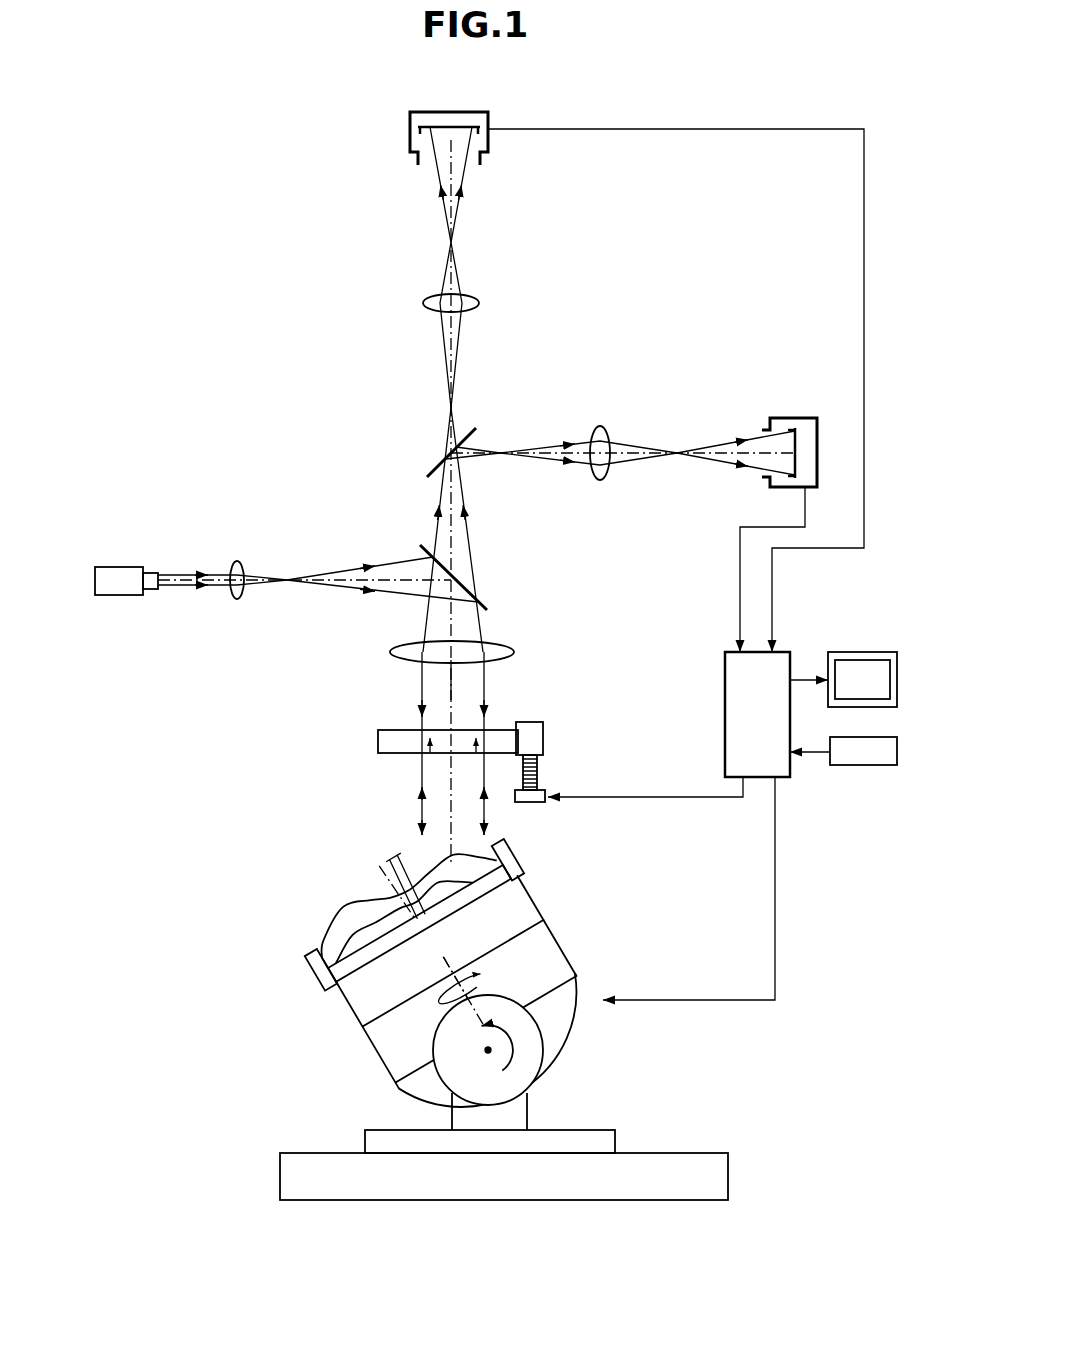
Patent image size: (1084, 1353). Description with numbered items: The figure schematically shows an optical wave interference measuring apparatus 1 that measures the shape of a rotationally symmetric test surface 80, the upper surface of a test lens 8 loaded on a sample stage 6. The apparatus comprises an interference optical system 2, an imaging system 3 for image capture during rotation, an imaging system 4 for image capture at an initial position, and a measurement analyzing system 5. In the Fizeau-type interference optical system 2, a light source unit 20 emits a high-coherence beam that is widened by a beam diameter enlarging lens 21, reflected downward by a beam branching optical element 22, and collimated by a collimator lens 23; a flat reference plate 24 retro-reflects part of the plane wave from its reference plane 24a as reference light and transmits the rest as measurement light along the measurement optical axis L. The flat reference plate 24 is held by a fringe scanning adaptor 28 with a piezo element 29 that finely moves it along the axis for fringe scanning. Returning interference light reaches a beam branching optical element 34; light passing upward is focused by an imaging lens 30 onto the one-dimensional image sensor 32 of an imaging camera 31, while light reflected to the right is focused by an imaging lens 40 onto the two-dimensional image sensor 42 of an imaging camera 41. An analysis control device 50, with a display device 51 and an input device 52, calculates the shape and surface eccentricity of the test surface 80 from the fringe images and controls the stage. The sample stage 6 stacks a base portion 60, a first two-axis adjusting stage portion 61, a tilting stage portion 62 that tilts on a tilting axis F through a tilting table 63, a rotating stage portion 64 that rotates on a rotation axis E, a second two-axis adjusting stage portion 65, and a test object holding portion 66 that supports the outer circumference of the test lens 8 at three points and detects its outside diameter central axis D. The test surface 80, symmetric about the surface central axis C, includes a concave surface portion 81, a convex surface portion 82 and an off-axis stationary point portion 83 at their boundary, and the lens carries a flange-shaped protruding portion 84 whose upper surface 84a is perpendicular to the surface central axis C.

The optical wave interference measuring apparatus 1 is at (688, 110).
The interference optical system 2 is at (357, 678).
The imaging system for image capture during rotation 3 is at (405, 243).
The imaging system for image capture at an initial position 4 is at (712, 400).
The measurement analyzing system 5 is at (716, 630).
The sample stage 6 is at (338, 1024).
The test lens 8 is at (325, 915).
The light source unit 20 is at (117, 568).
The beam diameter enlarging lens 21 is at (248, 556).
The beam branching optical element 22 is at (487, 608).
The collimator lens 23 is at (510, 648).
The flat reference plate 24 is at (378, 742).
The reference plane 24a is at (410, 753).
The fringe scanning adaptor 28 is at (552, 752).
The piezo element 29 is at (540, 771).
The imaging lens 30 is at (478, 303).
The imaging camera 31 is at (410, 136).
The one-dimensional image sensor 32 is at (484, 130).
The beam branching optical element 34 is at (464, 440).
The imaging lens 40 is at (603, 430).
The imaging camera 41 is at (812, 415).
The two-dimensional image sensor 42 is at (796, 426).
The analysis control device 50 is at (727, 678).
The display device 51 is at (848, 653).
The input device 52 is at (856, 766).
The base portion 60 is at (696, 1162).
The first two-axis adjusting stage portion 61 is at (585, 1130).
The tilting stage portion 62 is at (540, 1075).
The tilting table 63 is at (572, 1018).
The rotating stage portion 64 is at (540, 950).
The second two-axis adjusting stage portion 65 is at (522, 912).
The test object holding portion 66 is at (527, 851).
The test surface 80 is at (352, 907).
The concave surface portion 81 is at (418, 876).
The convex surface portion 82 is at (483, 850).
The off-axis stationary point portion 83 is at (440, 857).
The protruding portion 84 is at (320, 973).
The upper surface 84a is at (330, 943).
The surface central axis C is at (393, 855).
The outside diameter central axis D is at (388, 878).
The rotation axis E is at (480, 1003).
The tilting axis F is at (486, 1052).
The measurement optical axis L is at (454, 672).